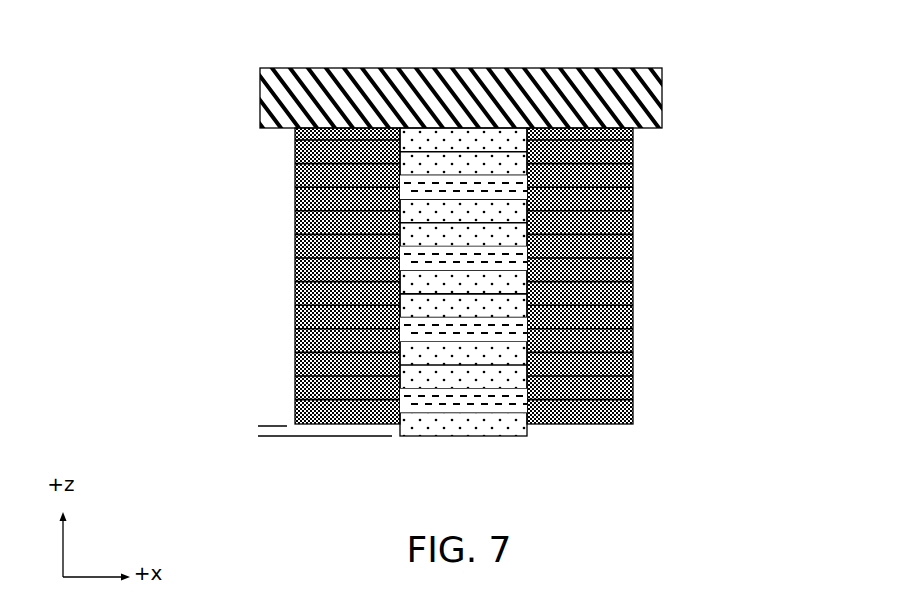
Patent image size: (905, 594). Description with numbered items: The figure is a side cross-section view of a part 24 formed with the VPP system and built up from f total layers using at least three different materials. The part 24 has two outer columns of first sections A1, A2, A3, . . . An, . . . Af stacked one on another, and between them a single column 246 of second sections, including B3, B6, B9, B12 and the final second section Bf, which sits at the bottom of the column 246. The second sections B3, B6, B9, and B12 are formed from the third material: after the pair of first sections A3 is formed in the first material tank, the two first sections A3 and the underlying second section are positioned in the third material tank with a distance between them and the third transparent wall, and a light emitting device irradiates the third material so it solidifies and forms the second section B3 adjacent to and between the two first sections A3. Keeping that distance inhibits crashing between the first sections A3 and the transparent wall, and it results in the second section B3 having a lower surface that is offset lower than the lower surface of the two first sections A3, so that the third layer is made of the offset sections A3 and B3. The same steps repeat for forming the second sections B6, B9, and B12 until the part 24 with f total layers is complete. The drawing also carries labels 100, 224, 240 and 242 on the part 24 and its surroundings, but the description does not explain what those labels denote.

The substrate 100 is at (638, 64).
The part 24 is at (123, 255).
The first material stack 224 is at (271, 228).
The second material column 240 is at (364, 457).
The layer lines 242 is at (252, 430).
The column 246 is at (499, 456).
The first section A1 is at (283, 133).
The first section A2 is at (283, 151).
The first section A3 is at (283, 175).
The first section An is at (283, 292).
The first section Af is at (281, 413).
The second section B3 is at (467, 186).
The second section B6 is at (475, 258).
The second section B9 is at (485, 332).
The second section B12 is at (495, 407).
The second section Bf is at (453, 425).